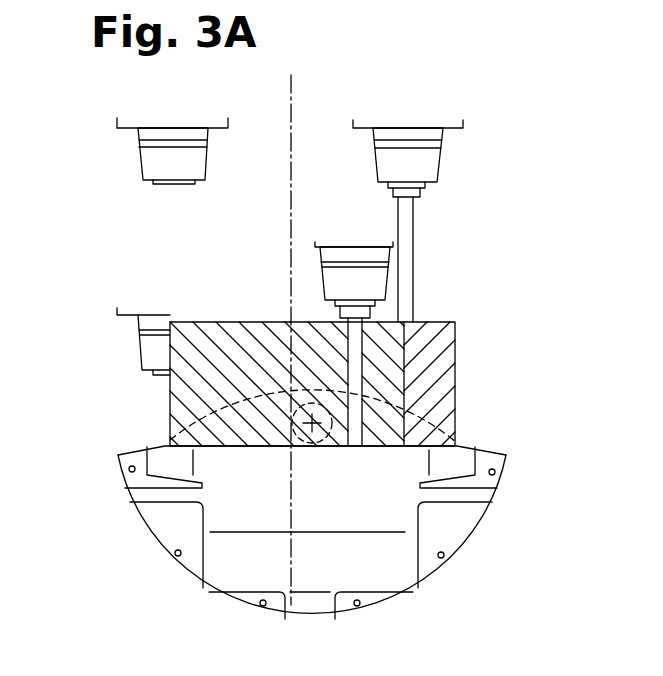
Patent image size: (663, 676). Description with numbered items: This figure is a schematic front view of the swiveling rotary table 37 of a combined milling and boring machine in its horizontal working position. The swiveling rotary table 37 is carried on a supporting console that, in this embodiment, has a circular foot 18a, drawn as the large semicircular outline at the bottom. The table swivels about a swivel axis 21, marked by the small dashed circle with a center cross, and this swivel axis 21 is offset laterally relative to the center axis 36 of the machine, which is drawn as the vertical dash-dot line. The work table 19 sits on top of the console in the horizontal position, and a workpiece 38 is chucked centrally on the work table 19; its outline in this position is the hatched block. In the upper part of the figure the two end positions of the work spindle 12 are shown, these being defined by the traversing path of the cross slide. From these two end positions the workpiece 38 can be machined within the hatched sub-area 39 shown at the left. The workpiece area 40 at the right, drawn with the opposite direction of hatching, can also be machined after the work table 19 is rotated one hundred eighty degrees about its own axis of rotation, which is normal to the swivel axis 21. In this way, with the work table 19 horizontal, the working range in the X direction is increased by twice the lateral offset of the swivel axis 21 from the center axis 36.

The work spindle 12 is at (155, 157).
The center axis 36 is at (291, 195).
The hatched sub-area 39 is at (200, 353).
The workpiece area 40 is at (440, 336).
The swivel axis 21 is at (325, 412).
The work table 19 is at (158, 458).
The swiveling rotary table 37 is at (133, 512).
The workpiece 38 is at (232, 452).
The circular foot 18a is at (452, 520).